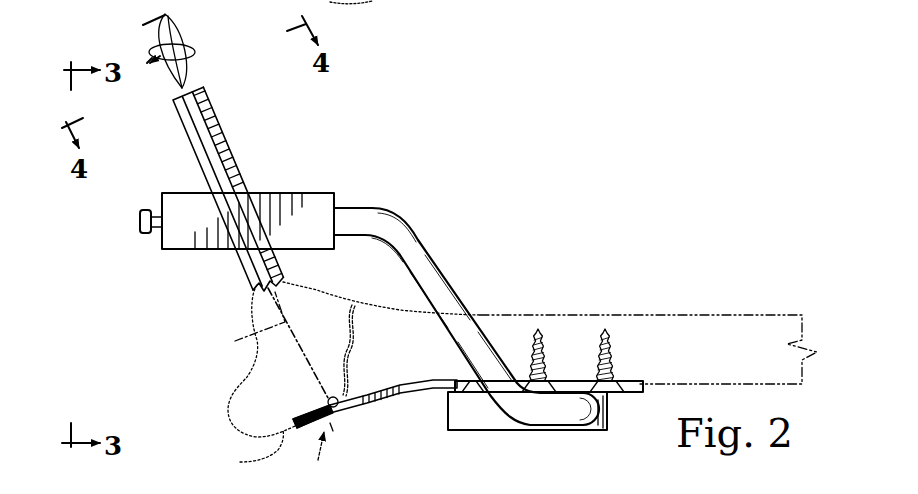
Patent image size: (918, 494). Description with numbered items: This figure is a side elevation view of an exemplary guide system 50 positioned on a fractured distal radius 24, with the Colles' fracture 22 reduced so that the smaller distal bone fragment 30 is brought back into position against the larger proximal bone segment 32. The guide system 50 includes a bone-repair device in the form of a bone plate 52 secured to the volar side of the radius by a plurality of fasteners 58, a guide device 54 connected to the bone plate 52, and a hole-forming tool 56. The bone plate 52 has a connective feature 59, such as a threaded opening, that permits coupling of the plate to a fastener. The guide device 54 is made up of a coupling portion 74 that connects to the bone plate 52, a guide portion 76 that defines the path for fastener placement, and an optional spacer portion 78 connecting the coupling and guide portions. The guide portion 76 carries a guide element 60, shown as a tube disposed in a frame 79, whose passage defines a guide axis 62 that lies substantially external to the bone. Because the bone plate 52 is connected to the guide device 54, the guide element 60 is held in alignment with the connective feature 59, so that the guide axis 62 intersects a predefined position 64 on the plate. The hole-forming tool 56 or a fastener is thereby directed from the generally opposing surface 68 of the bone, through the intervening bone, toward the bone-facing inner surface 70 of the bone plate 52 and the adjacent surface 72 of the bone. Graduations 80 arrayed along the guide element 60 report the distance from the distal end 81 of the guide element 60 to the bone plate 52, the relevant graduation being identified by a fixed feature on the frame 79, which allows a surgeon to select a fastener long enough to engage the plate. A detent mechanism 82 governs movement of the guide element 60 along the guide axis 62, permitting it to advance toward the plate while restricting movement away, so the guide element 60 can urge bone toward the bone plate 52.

The Colles' fracture 22 is at (350, 355).
The distal radius 24 is at (514, 317).
The distal bone fragment 30 is at (245, 400).
The proximal bone segment 32 is at (398, 391).
The guide system 50 is at (108, 244).
The bone plate 52 is at (374, 407).
The guide device 54 is at (408, 207).
The hole-forming tool 56 is at (170, 42).
The fasteners 58 is at (595, 348).
The connective feature 59 is at (316, 454).
The guide element 60 is at (190, 146).
The guide axis 62 is at (241, 323).
The predefined position 64 is at (308, 407).
The opposing surface 68 is at (333, 298).
The inner surface 70 is at (337, 410).
The adjacent surface 72 is at (244, 453).
The coupling portion 74 is at (552, 436).
The guide portion 76 is at (301, 182).
The spacer portion 78 is at (449, 270).
The frame 79 is at (178, 243).
The graduations 80 is at (230, 153).
The distal end 81 is at (270, 285).
The detent mechanism 82 is at (643, 391).